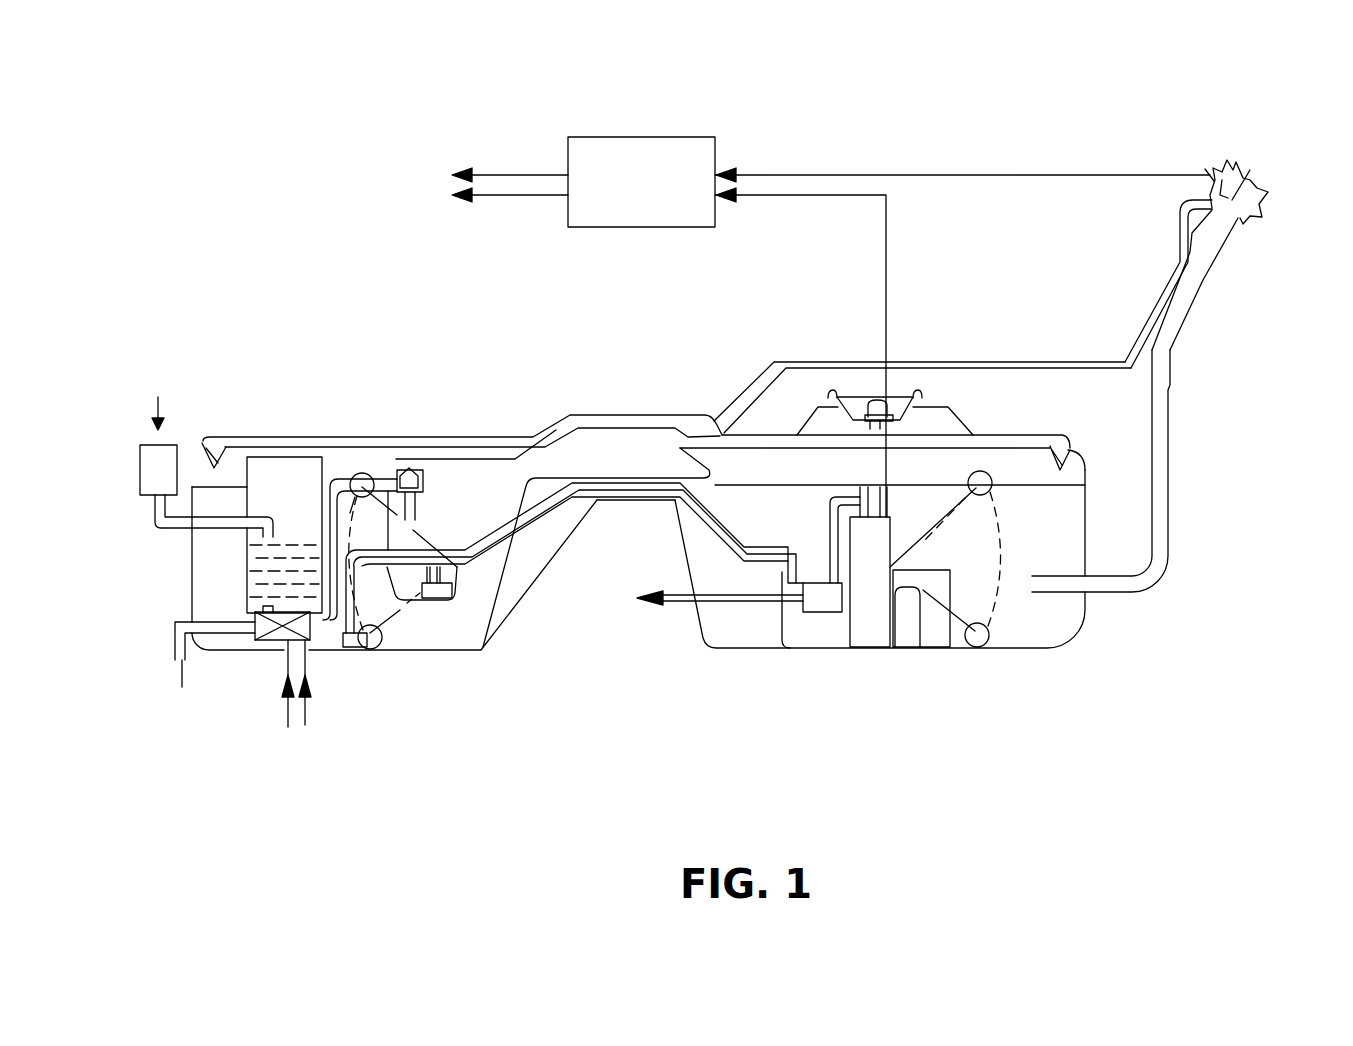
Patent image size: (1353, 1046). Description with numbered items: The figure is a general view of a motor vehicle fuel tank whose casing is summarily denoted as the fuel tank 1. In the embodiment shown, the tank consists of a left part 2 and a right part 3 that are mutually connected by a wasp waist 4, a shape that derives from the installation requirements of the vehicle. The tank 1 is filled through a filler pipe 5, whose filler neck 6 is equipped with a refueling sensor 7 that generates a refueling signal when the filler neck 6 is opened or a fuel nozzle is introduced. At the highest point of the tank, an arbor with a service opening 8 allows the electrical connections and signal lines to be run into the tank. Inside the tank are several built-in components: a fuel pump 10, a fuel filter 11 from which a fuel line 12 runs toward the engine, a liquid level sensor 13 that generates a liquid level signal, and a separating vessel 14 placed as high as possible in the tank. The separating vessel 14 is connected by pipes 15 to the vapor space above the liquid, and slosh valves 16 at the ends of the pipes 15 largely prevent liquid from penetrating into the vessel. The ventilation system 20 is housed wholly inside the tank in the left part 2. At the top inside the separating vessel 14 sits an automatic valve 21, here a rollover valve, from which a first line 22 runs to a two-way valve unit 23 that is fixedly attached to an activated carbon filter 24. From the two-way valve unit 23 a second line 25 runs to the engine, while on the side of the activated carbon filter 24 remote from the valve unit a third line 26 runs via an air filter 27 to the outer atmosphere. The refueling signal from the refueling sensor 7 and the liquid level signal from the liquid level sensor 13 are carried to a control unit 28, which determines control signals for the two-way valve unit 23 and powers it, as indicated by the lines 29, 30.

The fuel tank 1 is at (709, 563).
The left part 2 is at (485, 663).
The right part 3 is at (738, 663).
The wasp waist 4 is at (625, 500).
The filler pipe 5 is at (1163, 343).
The filler neck 6 is at (1247, 222).
The refueling sensor 7 is at (1212, 173).
The service opening 8 is at (897, 405).
The fuel pump 10 is at (907, 617).
The fuel filter 11 is at (866, 612).
The fuel supply line 12 is at (680, 600).
The liquid level sensor 13 is at (990, 490).
The separating vessel 14 is at (649, 447).
The pipes 15 is at (1010, 440).
The slosh valves 16 is at (1080, 448).
The ventilation system 20 is at (300, 392).
The automatic valve 21 is at (408, 474).
The first line 22 is at (333, 520).
The two-way valve unit 23 is at (245, 640).
The activated carbon filter 24 is at (297, 585).
The second line 25 is at (178, 624).
The third line 26 is at (217, 522).
The air filter 27 is at (157, 467).
The control unit 28 is at (632, 183).
The line 29 is at (497, 173).
The line 30 is at (523, 193).